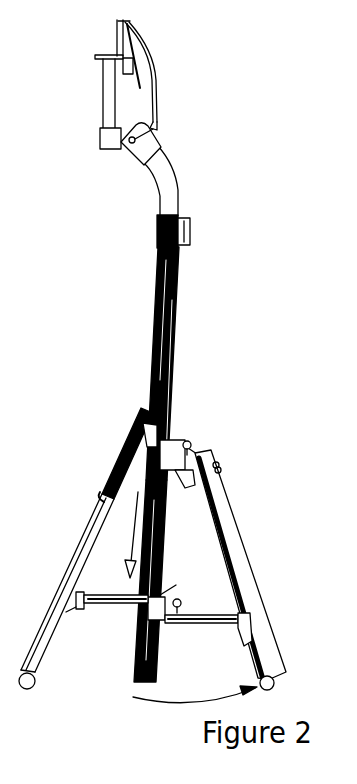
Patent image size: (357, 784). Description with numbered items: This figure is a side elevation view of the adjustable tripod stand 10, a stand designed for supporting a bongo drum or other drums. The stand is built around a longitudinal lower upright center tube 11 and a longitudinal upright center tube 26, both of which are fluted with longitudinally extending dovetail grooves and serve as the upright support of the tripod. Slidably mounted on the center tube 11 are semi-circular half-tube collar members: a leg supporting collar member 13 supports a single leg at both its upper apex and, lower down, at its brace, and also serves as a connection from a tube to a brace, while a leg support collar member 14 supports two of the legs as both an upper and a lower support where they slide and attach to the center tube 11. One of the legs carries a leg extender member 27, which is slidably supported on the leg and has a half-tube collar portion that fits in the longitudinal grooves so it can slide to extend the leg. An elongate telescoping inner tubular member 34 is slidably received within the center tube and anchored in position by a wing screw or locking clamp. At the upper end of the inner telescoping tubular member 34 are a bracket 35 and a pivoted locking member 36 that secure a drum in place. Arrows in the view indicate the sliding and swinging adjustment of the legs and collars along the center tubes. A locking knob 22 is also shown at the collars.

The adjustable tripod stand 10 is at (80, 408).
The lower upright center tube 11 is at (133, 665).
The leg supporting collar member 13 is at (193, 485).
The leg support collar member 14 is at (140, 612).
The locking knob 22 is at (190, 443).
The upright center tube 26 is at (157, 312).
The leg extender member 27 is at (243, 548).
The telescoping inner tubular member 34 is at (158, 185).
The bracket 35 is at (99, 143).
The pivoted locking member 36 is at (153, 77).